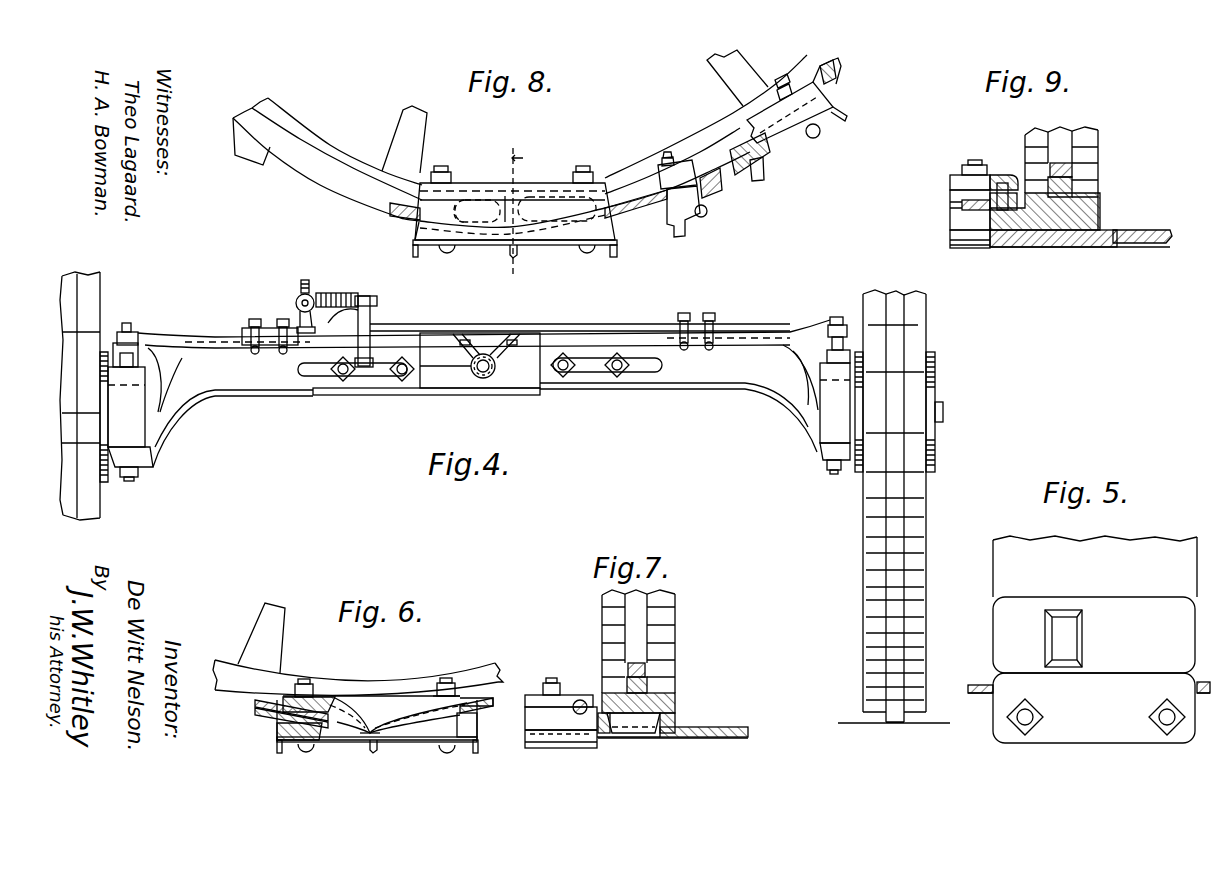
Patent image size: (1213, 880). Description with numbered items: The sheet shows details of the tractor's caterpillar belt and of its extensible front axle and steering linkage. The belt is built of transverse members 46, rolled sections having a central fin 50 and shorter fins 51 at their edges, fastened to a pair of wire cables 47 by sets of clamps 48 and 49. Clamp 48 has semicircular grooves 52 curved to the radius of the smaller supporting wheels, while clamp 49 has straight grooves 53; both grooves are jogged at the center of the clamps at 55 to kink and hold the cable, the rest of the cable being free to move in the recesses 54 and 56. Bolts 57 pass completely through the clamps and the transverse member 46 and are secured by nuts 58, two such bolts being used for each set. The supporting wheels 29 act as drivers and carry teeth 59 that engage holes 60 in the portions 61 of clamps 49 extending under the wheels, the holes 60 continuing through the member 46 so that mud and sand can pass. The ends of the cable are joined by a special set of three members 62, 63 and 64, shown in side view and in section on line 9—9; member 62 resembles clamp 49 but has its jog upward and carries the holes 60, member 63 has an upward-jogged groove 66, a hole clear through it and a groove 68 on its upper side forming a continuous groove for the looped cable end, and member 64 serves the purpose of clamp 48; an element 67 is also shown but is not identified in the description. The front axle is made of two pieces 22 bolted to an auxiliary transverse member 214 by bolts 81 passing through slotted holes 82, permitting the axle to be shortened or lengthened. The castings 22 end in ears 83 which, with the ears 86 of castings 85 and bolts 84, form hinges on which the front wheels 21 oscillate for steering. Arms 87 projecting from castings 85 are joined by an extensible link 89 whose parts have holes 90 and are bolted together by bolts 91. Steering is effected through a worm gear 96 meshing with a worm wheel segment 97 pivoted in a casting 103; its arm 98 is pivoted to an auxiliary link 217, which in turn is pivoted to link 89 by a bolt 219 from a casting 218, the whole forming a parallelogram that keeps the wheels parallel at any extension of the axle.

In FIG. 8, the section line 9 is at (515, 209).
In FIG. 4, the front wheel 21 is at (872, 607).
In FIG. 4, the front axle member 22 is at (236, 385).
In FIG. 8, the supporting wheel 29 is at (316, 158).
In FIG. 9, the supporting wheel 29 is at (1092, 157).
In FIG. 6, the supporting wheel 29 is at (358, 649).
In FIG. 7, the supporting wheel 29 is at (667, 647).
In FIG. 8, the transverse member 46 is at (473, 247).
In FIG. 9, the transverse member 46 is at (1148, 230).
In FIG. 6, the transverse member 46 is at (333, 740).
In FIG. 7, the transverse member 46 is at (727, 727).
In FIG. 8, the wire cable 47 is at (640, 216).
In FIG. 6, the wire cable 47 is at (283, 707).
In FIG. 7, the wire cable 47 is at (580, 703).
In FIG. 8, the clamp 48 is at (753, 115).
In FIG. 6, the clamp 48 is at (367, 707).
In FIG. 7, the clamp 48 is at (532, 695).
In FIG. 8, the clamp 49 is at (816, 98).
In FIG. 6, the clamp 49 is at (272, 733).
In FIG. 7, the clamp 49 is at (532, 720).
In FIG. 8, the fin 50 is at (762, 173).
In FIG. 9, the fin 50 is at (1017, 248).
In FIG. 6, the fin 50 is at (363, 730).
In FIG. 7, the fin 50 is at (575, 743).
In FIG. 8, the shorter fin 51 is at (612, 251).
In FIG. 9, the shorter fin 51 is at (1123, 246).
In FIG. 6, the shorter fin 51 is at (280, 752).
In FIG. 7, the shorter fin 51 is at (617, 737).
In FIG. 6, the semicircular groove 52 is at (463, 703).
In FIG. 6, the semicircular groove 53 is at (459, 722).
In FIG. 6, the recess 54 is at (277, 722).
In FIG. 6, the jog 55 is at (367, 735).
In FIG. 6, the recess 56 is at (283, 688).
In FIG. 8, the bolt 57 is at (665, 158).
In FIG. 6, the bolt 57 is at (447, 683).
In FIG. 8, the nut 58 is at (660, 173).
In FIG. 6, the nut 58 is at (437, 683).
In FIG. 8, the tooth 59 is at (243, 158).
In FIG. 7, the tooth 59 is at (637, 723).
In FIG. 5, the hole 60 is at (1070, 637).
In FIG. 7, the clamp portion 61 is at (677, 717).
In FIG. 8, the clamp member 62 is at (418, 230).
In FIG. 9, the clamp member 62 is at (955, 221).
In FIG. 8, the clamp member 63 is at (383, 201).
In FIG. 9, the clamp member 63 is at (957, 203).
In FIG. 8, the clamp member 64 is at (517, 193).
In FIG. 9, the clamp member 64 is at (957, 183).
In FIG. 8, the groove 66 is at (470, 218).
In FIG. 8, the pin 67 is at (505, 197).
In FIG. 9, the pin 67 is at (1000, 176).
In FIG. 8, the groove 68 is at (457, 200).
In FIG. 4, the bolt 81 is at (397, 372).
In FIG. 4, the slotted hole 82 is at (307, 373).
In FIG. 4, the ear 83 is at (822, 452).
In FIG. 4, the bolt 84 is at (835, 474).
In FIG. 4, the casting 85 is at (842, 420).
In FIG. 4, the ear 86 is at (828, 404).
In FIG. 4, the projecting arm 87 is at (140, 333).
In FIG. 4, the extensible link 89 is at (190, 338).
In FIG. 4, the hole 90 is at (233, 342).
In FIG. 4, the bolt 91 is at (283, 320).
In FIG. 4, the worm gear 96 is at (297, 297).
In FIG. 4, the worm wheel segment 97 is at (332, 295).
In FIG. 4, the arm 98 is at (372, 320).
In FIG. 4, the casting 103 is at (378, 326).
In FIG. 4, the auxiliary transverse member 214 is at (457, 385).
In FIG. 4, the auxiliary link 217 is at (433, 365).
In FIG. 4, the casting 218 is at (478, 342).
In FIG. 4, the bolt 219 is at (486, 374).